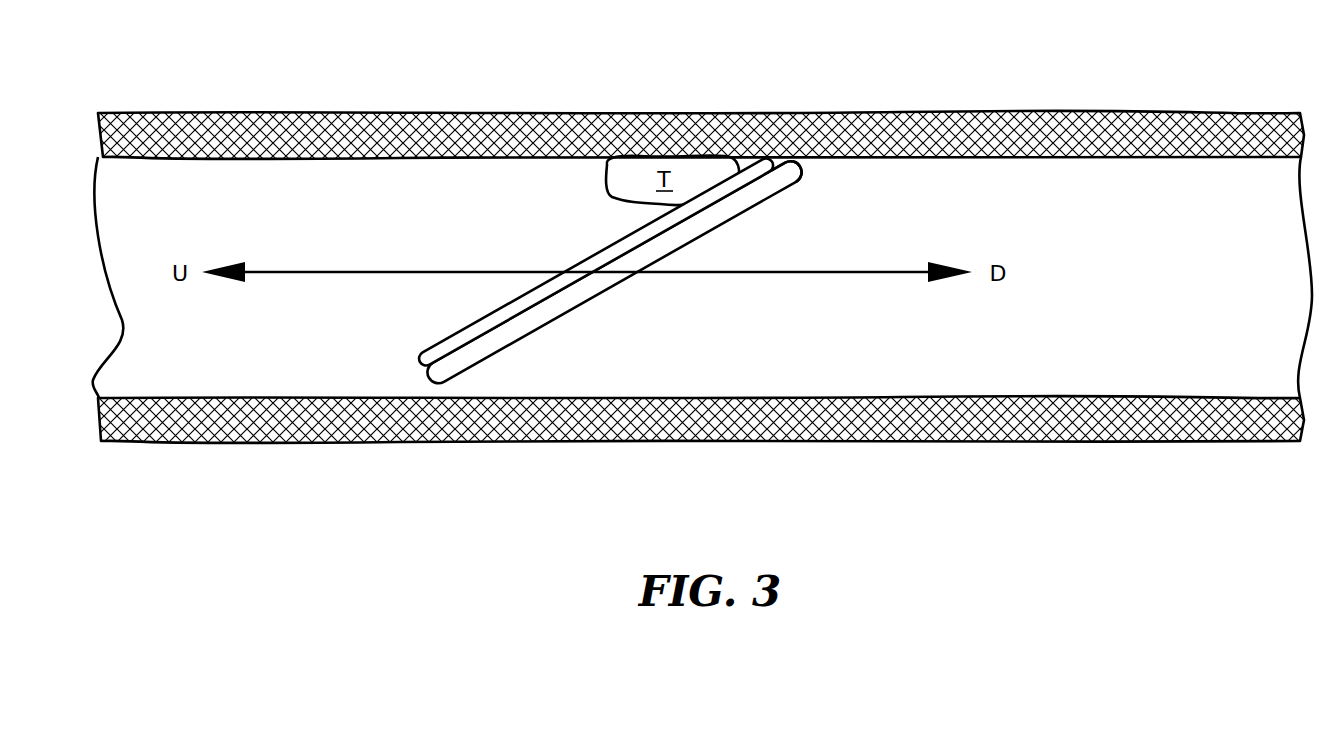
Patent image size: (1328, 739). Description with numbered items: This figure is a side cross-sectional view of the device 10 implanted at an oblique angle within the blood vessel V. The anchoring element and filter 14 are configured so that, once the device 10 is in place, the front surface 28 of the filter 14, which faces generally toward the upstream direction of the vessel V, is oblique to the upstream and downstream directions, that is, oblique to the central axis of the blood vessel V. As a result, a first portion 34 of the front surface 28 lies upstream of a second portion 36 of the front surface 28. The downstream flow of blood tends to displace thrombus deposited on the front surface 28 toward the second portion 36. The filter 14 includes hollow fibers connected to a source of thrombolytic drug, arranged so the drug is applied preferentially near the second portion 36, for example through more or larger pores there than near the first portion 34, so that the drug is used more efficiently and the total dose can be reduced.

The device 10 is at (588, 211).
The filter 14 is at (812, 166).
The front surface 28 is at (432, 352).
The first portion 34 is at (408, 388).
The second portion 36 is at (797, 155).
The blood vessel V is at (1063, 442).